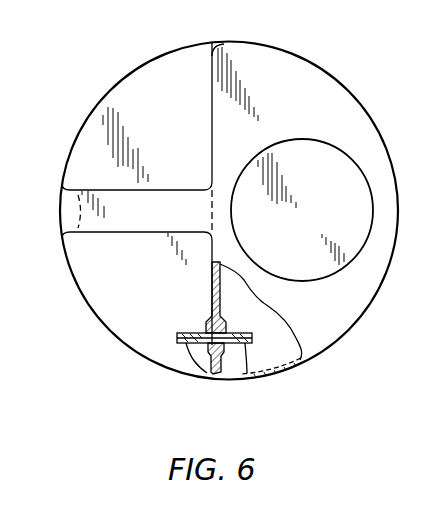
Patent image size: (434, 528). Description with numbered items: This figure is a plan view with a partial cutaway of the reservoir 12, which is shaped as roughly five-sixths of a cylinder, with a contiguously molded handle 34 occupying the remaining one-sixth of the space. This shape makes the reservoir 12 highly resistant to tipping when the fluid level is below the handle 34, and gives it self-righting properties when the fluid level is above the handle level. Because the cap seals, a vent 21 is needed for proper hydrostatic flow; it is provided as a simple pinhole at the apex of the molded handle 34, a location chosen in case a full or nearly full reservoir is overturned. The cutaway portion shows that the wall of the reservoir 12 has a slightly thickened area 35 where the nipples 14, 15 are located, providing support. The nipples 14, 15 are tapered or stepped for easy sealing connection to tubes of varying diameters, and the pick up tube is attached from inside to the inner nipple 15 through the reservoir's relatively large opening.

The reservoir 12 is at (167, 54).
The vent 21 is at (64, 212).
The handle 34 is at (137, 226).
The thickened area 35 is at (222, 328).
The nipple 14 is at (186, 348).
The inner nipple 15 is at (251, 371).